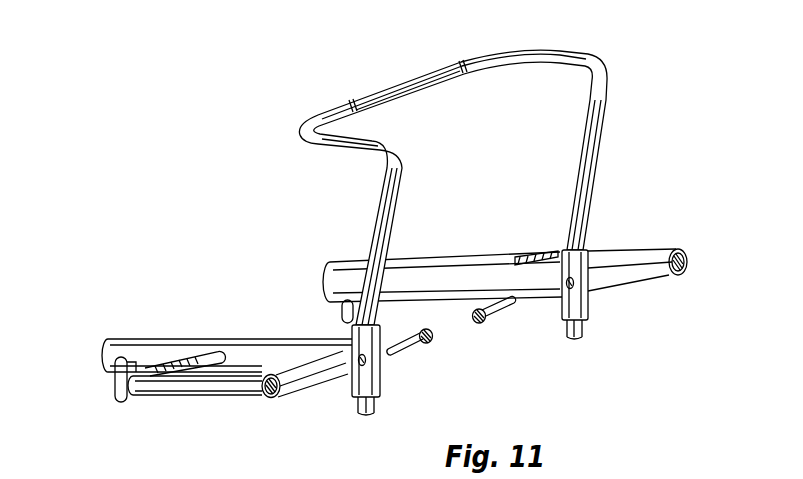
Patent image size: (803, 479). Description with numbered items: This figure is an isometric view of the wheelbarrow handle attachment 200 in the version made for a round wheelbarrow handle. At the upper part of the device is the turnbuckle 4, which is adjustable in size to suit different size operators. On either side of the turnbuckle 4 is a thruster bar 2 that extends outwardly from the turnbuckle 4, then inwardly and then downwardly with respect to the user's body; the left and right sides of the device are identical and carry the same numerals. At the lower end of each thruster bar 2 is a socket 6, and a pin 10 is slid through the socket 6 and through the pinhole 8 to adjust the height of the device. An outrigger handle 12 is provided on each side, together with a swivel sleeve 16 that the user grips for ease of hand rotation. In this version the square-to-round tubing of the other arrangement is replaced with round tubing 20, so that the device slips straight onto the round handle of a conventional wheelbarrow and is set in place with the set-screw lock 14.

The frame assembly 200 is at (205, 52).
The thruster bar 2 is at (519, 50).
The turnbuckle 4 is at (417, 77).
The socket 6 is at (594, 309).
The pinhole 8 is at (595, 290).
The pin 10 is at (500, 314).
The outrigger handle 12 is at (548, 252).
The set-screw lock 14 is at (326, 293).
The swivel sleeve 16 is at (657, 280).
The round tubing 20 is at (327, 262).